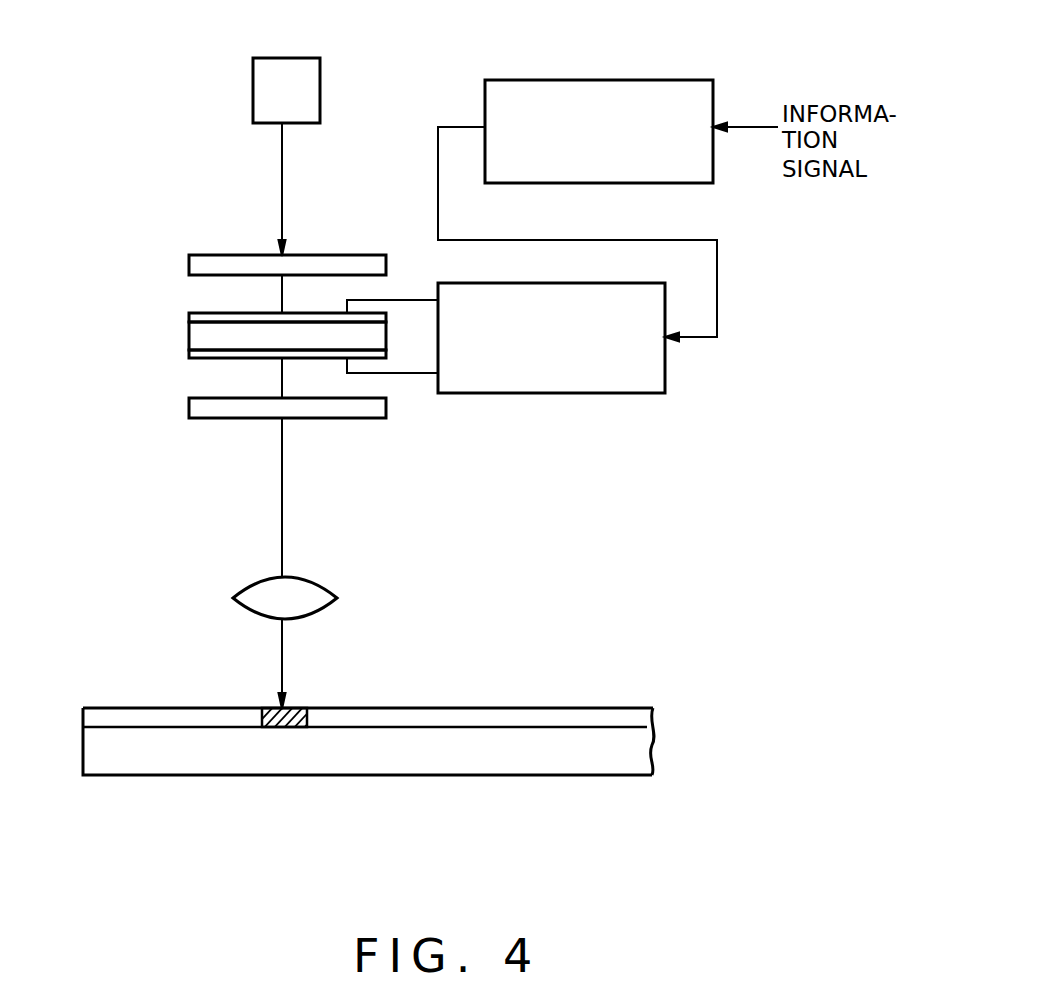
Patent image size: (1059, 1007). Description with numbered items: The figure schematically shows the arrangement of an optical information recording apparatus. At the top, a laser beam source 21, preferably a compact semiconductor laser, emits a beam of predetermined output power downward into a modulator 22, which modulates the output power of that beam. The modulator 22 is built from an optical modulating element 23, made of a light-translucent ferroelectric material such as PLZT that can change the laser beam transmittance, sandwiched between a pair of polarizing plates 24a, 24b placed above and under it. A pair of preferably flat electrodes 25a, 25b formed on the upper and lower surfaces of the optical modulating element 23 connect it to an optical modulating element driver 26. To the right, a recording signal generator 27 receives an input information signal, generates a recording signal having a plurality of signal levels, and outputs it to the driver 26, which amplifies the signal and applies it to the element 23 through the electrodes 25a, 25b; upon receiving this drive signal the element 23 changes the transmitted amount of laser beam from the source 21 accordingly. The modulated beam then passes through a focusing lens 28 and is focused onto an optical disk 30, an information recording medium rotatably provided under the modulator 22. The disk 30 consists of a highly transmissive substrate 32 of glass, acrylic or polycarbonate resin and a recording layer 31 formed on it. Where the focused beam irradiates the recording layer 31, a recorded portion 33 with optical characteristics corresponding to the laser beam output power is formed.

The laser beam source 21 is at (322, 99).
The modulator 22 is at (213, 314).
The optical modulating element 23 is at (193, 338).
The polarizing plate 24a is at (236, 255).
The polarizing plate 24b is at (242, 419).
The electrode 25a is at (207, 314).
The electrode 25b is at (212, 357).
The optical modulating element driver 26 is at (548, 393).
The recording signal generator 27 is at (577, 80).
The focusing lens 28 is at (320, 583).
The optical disk 30 is at (343, 744).
The recording layer 31 is at (167, 708).
The substrate 32 is at (168, 775).
The recorded portion 33 is at (297, 708).